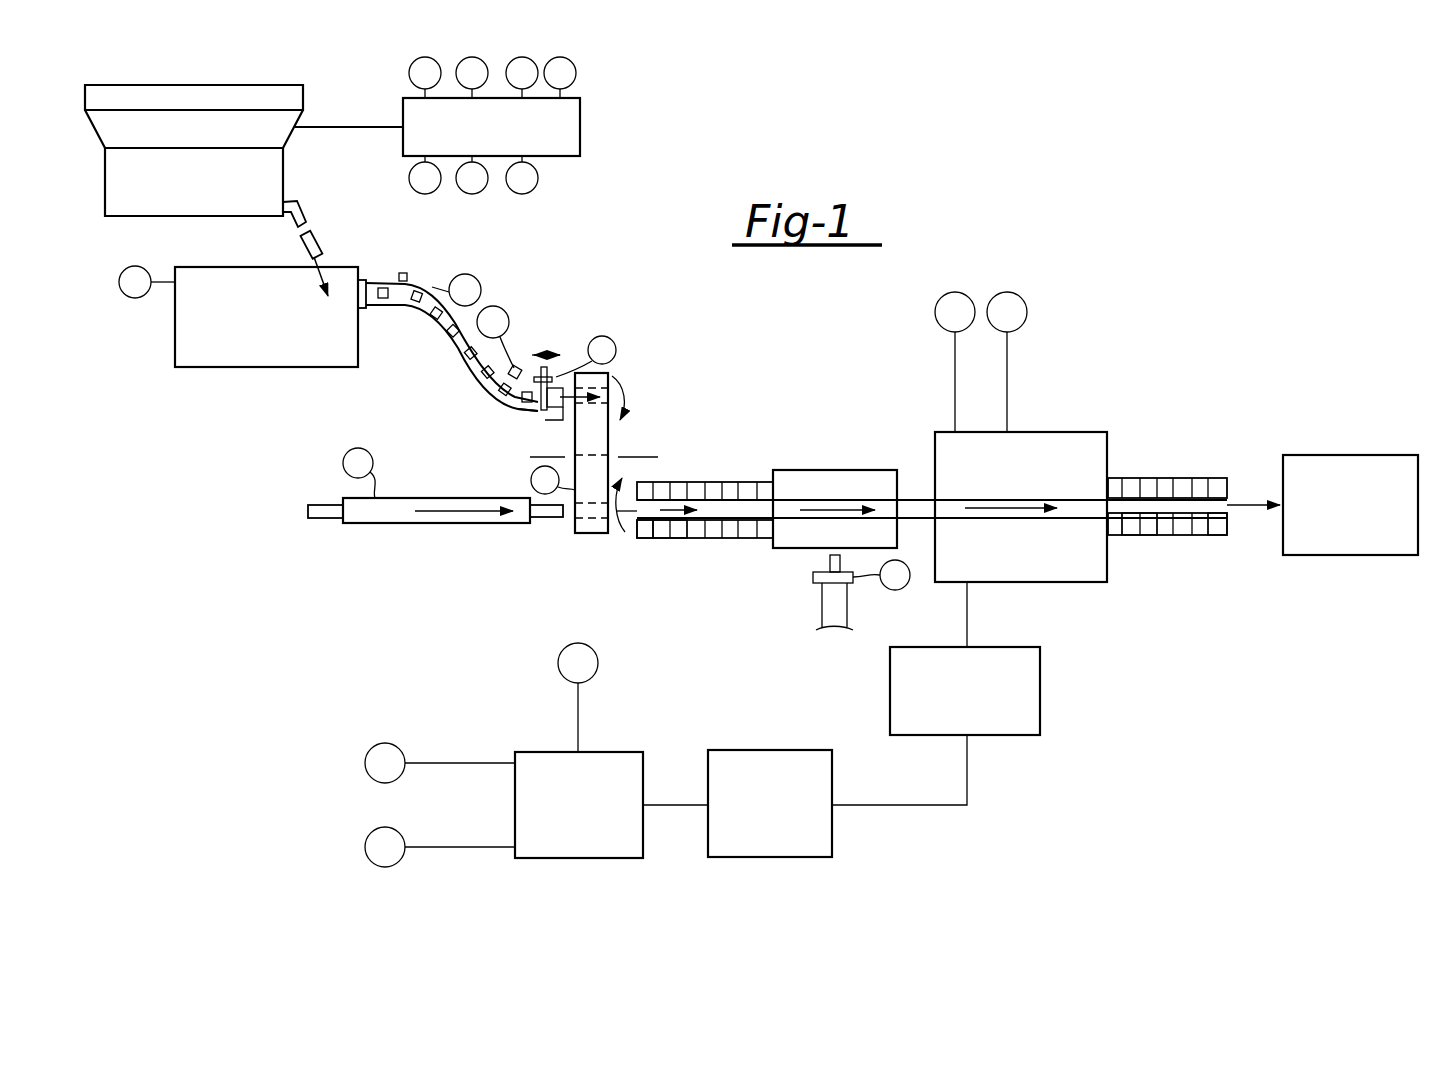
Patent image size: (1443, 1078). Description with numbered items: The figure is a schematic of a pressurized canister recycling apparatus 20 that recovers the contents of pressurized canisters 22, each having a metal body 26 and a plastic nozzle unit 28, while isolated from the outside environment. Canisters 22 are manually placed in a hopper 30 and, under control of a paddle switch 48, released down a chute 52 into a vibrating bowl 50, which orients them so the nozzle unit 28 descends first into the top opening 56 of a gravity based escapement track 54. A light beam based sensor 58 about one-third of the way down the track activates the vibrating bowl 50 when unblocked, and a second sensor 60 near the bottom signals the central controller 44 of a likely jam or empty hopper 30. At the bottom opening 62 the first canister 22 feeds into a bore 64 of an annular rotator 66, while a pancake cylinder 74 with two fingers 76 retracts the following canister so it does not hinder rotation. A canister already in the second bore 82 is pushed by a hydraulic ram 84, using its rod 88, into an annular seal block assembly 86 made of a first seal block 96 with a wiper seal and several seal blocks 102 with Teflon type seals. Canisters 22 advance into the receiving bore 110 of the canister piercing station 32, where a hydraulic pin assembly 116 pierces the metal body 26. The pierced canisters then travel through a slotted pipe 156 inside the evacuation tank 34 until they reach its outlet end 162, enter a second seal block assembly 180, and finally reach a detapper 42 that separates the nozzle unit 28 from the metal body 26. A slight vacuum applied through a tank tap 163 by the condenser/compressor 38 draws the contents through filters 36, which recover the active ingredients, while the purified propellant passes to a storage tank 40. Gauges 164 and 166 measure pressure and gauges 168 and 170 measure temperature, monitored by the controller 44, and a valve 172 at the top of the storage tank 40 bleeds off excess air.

The pressurized canister recycling apparatus 20 is at (252, 448).
The pressurized canister 22 is at (282, 235).
The metal body 26 is at (322, 240).
The nozzle unit 28 is at (395, 282).
The hopper 30 is at (277, 137).
The canister piercing station 32 is at (833, 466).
The evacuation tank 34 is at (946, 421).
The filters 36 is at (1040, 697).
The condenser/compressor 38 is at (765, 847).
The storage tank 40 is at (565, 858).
The detapper 42 is at (1323, 465).
The central controller 44 is at (580, 136).
The paddle switch 48 is at (221, 355).
The vibrating bowl 50 is at (175, 313).
The chute 52 is at (305, 213).
The escapement track 54 is at (455, 370).
The top opening 56 is at (356, 300).
The light beam based sensor 58 is at (410, 275).
The second sensor 60 is at (518, 366).
The bottom opening 62 is at (565, 414).
The bore 64 is at (612, 380).
The annular rotator 66 is at (625, 452).
The pancake cylinder 74 is at (556, 377).
The fingers 76 is at (533, 414).
The second bore 82 is at (580, 512).
The hydraulic ram 84 is at (375, 536).
The annular seal block assembly 86 is at (733, 478).
The rod 88 is at (550, 522).
The first seal block 96 is at (643, 532).
The seal blocks 102 is at (718, 530).
The receiving bore 110 is at (783, 510).
The hydraulic pin assembly 116 is at (813, 578).
The pipe 156 is at (910, 500).
The outlet end 162 is at (1230, 510).
The tank tap 163 is at (967, 584).
The pressure gauge 164 is at (955, 298).
The pressure gauge 166 is at (365, 765).
The temperature gauge 168 is at (1020, 305).
The temperature gauge 170 is at (367, 850).
The valve 172 is at (558, 665).
The seal block assembly 180 is at (1165, 475).